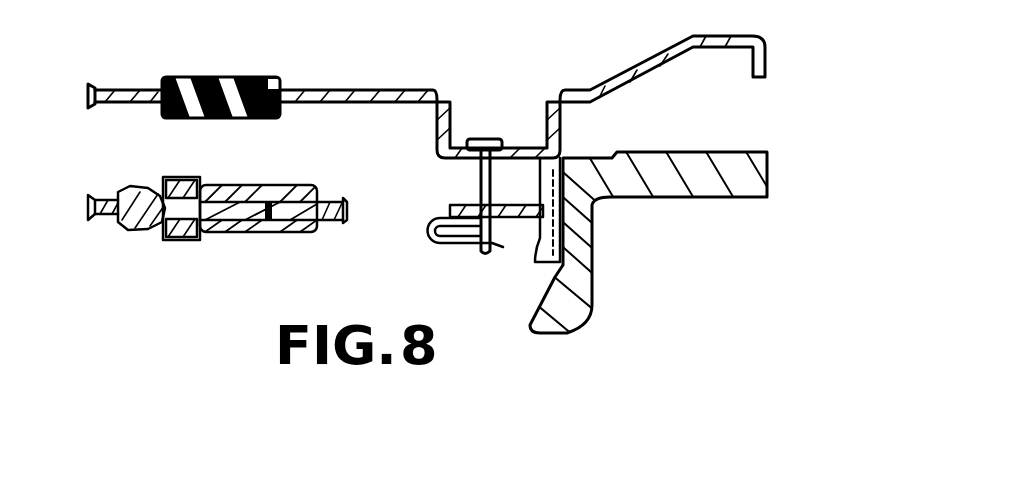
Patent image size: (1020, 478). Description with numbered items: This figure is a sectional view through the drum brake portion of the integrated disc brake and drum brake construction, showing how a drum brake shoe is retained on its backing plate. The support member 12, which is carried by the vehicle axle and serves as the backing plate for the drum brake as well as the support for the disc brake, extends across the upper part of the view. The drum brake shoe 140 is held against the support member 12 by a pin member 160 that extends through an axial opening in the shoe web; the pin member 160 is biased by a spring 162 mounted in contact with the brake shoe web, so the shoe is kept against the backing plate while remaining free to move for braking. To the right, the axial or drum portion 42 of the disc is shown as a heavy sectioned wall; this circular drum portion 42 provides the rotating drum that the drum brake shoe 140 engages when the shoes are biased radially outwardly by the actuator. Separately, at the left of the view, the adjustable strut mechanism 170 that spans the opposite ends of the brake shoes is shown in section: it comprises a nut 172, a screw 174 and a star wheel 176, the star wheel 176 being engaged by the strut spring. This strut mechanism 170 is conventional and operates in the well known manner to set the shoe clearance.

The support member 12 is at (418, 90).
The drum portion 42 is at (595, 277).
The drum brake shoe 140 is at (530, 218).
The pin member 160 is at (480, 182).
The spring 162 is at (428, 238).
The adjustable strut mechanism 170 is at (217, 206).
The nut 172 is at (290, 170).
The screw 174 is at (150, 187).
The star wheel 176 is at (185, 178).